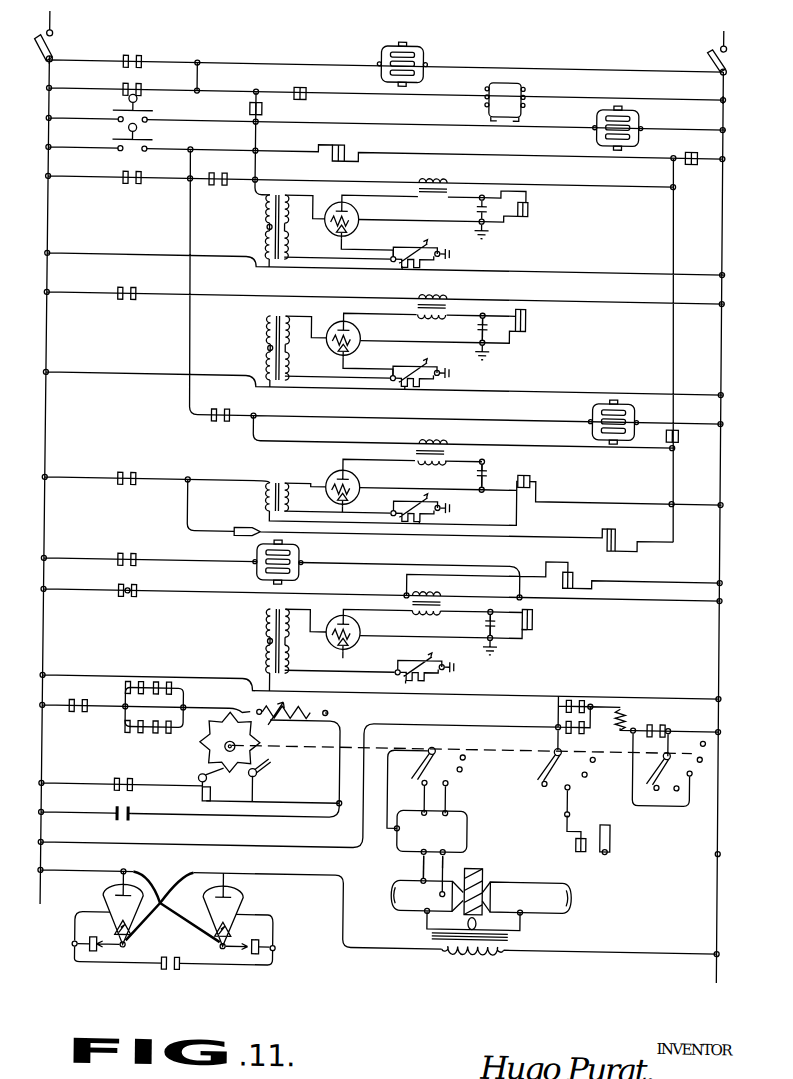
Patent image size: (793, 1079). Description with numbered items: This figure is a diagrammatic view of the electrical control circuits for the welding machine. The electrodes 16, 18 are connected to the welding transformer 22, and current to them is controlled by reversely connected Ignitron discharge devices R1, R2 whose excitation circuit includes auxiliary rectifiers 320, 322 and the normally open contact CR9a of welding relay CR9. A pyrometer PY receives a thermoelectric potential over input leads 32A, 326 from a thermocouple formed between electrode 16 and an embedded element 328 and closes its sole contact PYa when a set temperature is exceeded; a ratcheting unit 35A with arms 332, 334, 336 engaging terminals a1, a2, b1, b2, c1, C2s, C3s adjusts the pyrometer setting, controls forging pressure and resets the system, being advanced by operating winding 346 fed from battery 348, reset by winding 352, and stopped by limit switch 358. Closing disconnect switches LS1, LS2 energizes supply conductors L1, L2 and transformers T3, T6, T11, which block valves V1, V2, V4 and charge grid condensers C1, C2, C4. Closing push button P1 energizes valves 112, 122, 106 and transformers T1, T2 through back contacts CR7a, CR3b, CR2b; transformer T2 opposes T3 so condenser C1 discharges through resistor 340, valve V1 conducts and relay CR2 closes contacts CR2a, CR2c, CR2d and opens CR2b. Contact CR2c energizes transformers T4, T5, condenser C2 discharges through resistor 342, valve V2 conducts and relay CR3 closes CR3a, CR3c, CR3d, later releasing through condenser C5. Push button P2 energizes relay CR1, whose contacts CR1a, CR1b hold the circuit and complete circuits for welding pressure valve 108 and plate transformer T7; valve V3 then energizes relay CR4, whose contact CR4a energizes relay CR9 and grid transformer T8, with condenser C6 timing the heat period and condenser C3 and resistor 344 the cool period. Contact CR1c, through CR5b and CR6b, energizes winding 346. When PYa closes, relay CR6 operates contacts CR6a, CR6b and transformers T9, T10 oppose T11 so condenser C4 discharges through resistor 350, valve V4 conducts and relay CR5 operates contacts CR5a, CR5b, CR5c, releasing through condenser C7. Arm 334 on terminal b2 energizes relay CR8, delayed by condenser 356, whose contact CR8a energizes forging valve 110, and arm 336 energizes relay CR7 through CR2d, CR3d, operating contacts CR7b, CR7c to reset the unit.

The disconnect switch LS1 is at (56, 46).
The supply conductor L1 is at (48, 62).
The disconnect switch LS2 is at (728, 52).
The supply conductor L2 is at (726, 86).
The normally open contact of relay CR2 CR2a is at (132, 54).
The normally open contact of relay CR3 CR3a is at (136, 86).
The first-stage push button switch P1 is at (116, 108).
The second-stage push button switch P2 is at (122, 148).
The normally open contact of relay CR1 CR1b is at (126, 186).
The normally open contact of relay CR1 CR1a is at (217, 186).
The back contact of relay CR2 CR2b is at (321, 87).
The back contact of relay CR3 CR3b is at (265, 103).
The valve 112 is at (426, 48).
The two-way hydraulic valve 122 is at (510, 74).
The valve 106 is at (640, 110).
The control relay CR1 is at (344, 144).
The back contact of relay CR7 CR7a is at (704, 128).
The transformer T1 is at (444, 172).
The transformer T2 is at (268, 200).
The transformer T3 is at (268, 240).
The electronic valve V1 is at (361, 210).
The grid control condenser C1 is at (428, 232).
The control relay CR2 is at (532, 197).
The resistor 340 is at (405, 262).
The normally open contact of relay CR2 CR2c is at (121, 290).
The transformer T4 is at (447, 293).
The transformer T5 is at (270, 322).
The transformer T6 is at (270, 358).
The electronic valve V2 is at (364, 327).
The grid control condenser C2 is at (428, 354).
The control relay CR3 is at (531, 311).
The condenser C5 is at (495, 321).
The resistor 342 is at (409, 382).
The welding pressure control valve 108 is at (612, 393).
The normally open contact of relay CR3 CR3c is at (232, 402).
The contact of relay CR5 CR5c is at (690, 435).
The plate transformer T7 is at (446, 433).
The grid transformer T8 is at (292, 482).
The electronic valve V3 is at (364, 474).
The condenser C3 is at (430, 492).
The control relay CR4 is at (538, 473).
The condenser C6 is at (489, 475).
The normally open contact of relay CR4 CR4a is at (140, 467).
The resistor 344 is at (425, 516).
The welding control relay CR9 is at (645, 509).
The sole contact of relay CR8 CR8a is at (118, 556).
The high pressure or forging valve 110 is at (304, 549).
The transformer T9 is at (445, 584).
The control relay CR6 is at (581, 562).
The pyrometer contact PYa is at (124, 590).
The transformer T10 is at (294, 610).
The electronic valve V4 is at (366, 620).
The control relay CR5 is at (540, 610).
The condenser C7 is at (503, 620).
The transformer T11 is at (297, 656).
The grid control condenser C4 is at (432, 647).
The resistor 350 is at (413, 676).
The normally open contact of relay CR1 CR1c is at (96, 697).
The contact of relay CR6 CR6a is at (142, 679).
The contact of relay CR5 CR5a is at (172, 679).
The back contact of relay CR6 CR6b is at (140, 731).
The back contact of relay CR5 CR5b is at (168, 730).
The operating winding of ratchet unit 346 is at (290, 698).
The cam 35A is at (212, 748).
The limit switch 358 is at (280, 760).
The contact of relay CR7 CR7b is at (140, 776).
The reset winding 352 is at (210, 792).
The battery 348 is at (136, 818).
The normally open contact of relay CR2 CR2d is at (580, 690).
The control relay CR7 is at (634, 698).
The normally open contact of relay CR3 CR3d is at (566, 712).
The contact of relay CR7 CR7c is at (664, 713).
The movable arm of ratchet unit 336 is at (680, 738).
The movable arm of ratchet unit 334 is at (572, 740).
The movable arm of ratchet unit 332 is at (446, 740).
The terminal a1 is at (429, 775).
The terminal a2 is at (457, 774).
The terminal b1 is at (534, 781).
The terminal b2 is at (579, 778).
The terminal c1 is at (662, 778).
The switch contact C3s is at (701, 760).
The switch contact C2s is at (688, 776).
The pyrometer unit PY is at (430, 832).
The pyrometer input lead 326 is at (476, 830).
The electrode 16 is at (477, 862).
The electrode 18 is at (537, 872).
The thermocouple element 328 is at (435, 905).
The lead 32A is at (431, 855).
The welding transformer 22 is at (488, 952).
The control relay CR8 is at (584, 835).
The delaying condenser 356 is at (616, 843).
The electric discharge device R1 is at (150, 876).
The electric discharge device R2 is at (249, 885).
The auxiliary rectifier 320 is at (103, 952).
The auxiliary rectifier 322 is at (265, 952).
The contact of relay CR9 CR9a is at (186, 967).